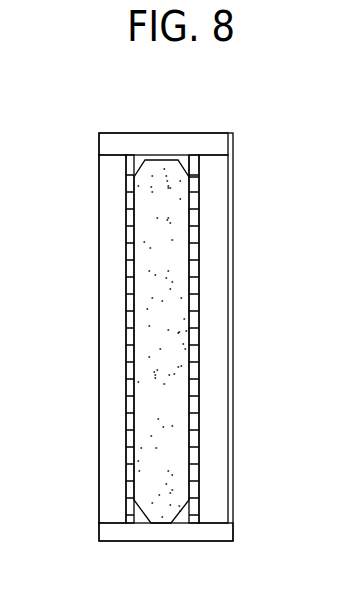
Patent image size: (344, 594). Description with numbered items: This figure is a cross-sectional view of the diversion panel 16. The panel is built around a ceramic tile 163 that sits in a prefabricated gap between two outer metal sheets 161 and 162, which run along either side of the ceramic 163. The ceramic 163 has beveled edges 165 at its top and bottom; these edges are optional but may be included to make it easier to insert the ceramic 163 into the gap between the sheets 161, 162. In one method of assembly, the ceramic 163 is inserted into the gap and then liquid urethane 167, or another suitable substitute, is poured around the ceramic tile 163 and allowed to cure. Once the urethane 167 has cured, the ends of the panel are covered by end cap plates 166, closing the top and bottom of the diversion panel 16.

The diversion panel 16 is at (62, 172).
The outer metal sheet 161 is at (229, 285).
The outer metal sheet 162 is at (103, 268).
The ceramic 163 is at (191, 372).
The beveled edges 165 is at (141, 157).
The end cap plates 166 is at (118, 140).
The liquid urethane 167 is at (192, 167).